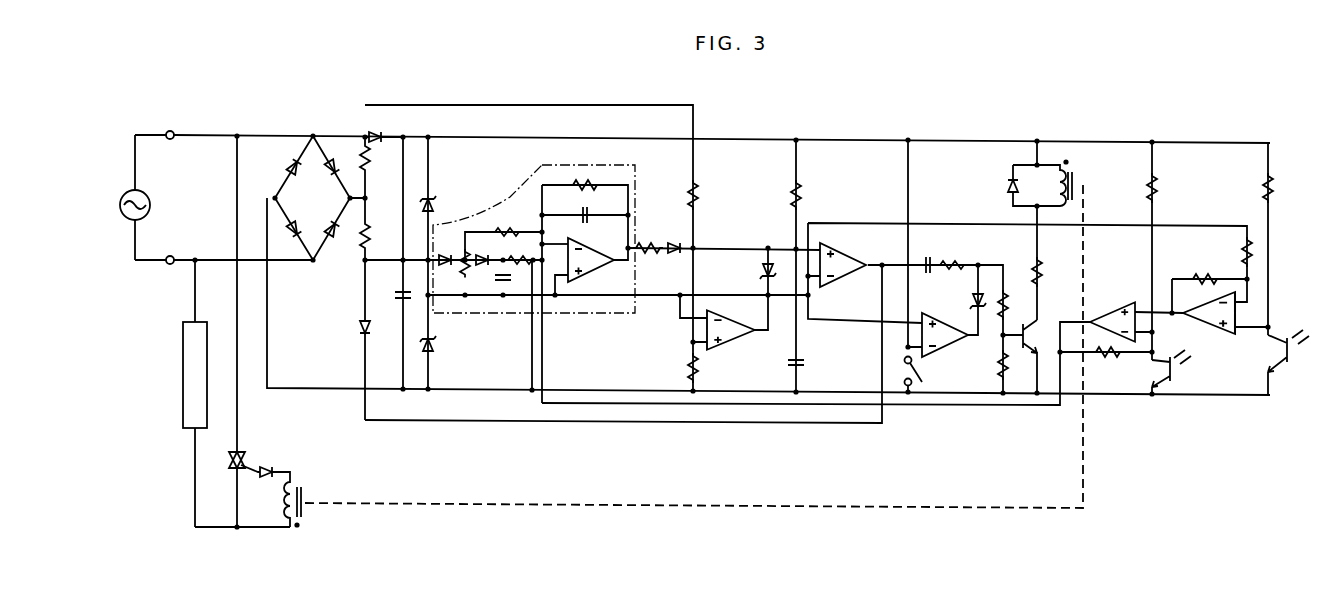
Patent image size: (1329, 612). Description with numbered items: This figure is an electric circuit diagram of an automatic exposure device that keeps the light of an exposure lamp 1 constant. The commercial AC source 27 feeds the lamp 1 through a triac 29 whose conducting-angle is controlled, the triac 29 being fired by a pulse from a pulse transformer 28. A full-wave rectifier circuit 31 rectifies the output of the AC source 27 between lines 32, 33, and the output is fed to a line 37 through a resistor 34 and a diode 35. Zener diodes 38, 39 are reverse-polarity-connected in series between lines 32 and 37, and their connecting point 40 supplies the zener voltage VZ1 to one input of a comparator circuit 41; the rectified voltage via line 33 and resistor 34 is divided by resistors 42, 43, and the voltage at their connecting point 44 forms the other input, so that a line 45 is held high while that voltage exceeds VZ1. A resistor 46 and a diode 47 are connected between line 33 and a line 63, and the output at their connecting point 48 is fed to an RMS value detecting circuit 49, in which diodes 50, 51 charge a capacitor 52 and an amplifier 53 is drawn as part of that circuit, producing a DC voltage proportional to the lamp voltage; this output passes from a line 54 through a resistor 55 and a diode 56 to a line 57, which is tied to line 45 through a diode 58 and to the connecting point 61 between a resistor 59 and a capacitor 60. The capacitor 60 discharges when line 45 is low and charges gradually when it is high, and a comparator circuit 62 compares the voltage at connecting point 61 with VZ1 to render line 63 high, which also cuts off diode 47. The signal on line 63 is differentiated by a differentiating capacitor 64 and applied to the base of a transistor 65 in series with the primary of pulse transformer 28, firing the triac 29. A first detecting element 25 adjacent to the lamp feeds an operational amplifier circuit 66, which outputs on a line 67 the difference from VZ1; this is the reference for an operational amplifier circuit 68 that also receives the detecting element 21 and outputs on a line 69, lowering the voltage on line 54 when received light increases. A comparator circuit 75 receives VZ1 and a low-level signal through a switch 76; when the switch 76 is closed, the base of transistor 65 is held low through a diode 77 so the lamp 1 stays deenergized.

The exposure lamp 1 is at (183, 390).
The detecting element 21 is at (1168, 388).
The first detecting element 25 is at (1277, 356).
The AC source 27 is at (147, 196).
The pulse transformer 28 is at (1076, 167).
The triac 29 is at (250, 465).
The full-wave rectifier circuit 31 is at (339, 155).
The line 32 is at (266, 320).
The line 33 is at (357, 204).
The resistor 34 is at (369, 163).
The diode 35 is at (379, 132).
The line 37 is at (495, 137).
The zener diode 38 is at (437, 200).
The zener diode 39 is at (433, 350).
The connecting point 40 is at (430, 298).
The comparator circuit 41 is at (732, 341).
The resistor 42 is at (696, 196).
The resistor 43 is at (697, 368).
The connecting point 44 is at (698, 350).
The line 45 is at (763, 336).
The resistor 46 is at (369, 235).
The diode 47 is at (362, 328).
The connecting point 48 is at (364, 262).
The RMS value detecting circuit 49 is at (533, 177).
The diode 50 is at (447, 255).
The diode 51 is at (471, 289).
The capacitor 52 is at (507, 290).
The operational amplifier 53 is at (590, 290).
The line 54 is at (645, 246).
The resistor 55 is at (650, 253).
The diode 56 is at (677, 243).
The line 57 is at (728, 247).
The diode 58 is at (760, 272).
The resistor 59 is at (800, 196).
The capacitor 60 is at (805, 363).
The connecting point 61 is at (796, 248).
The comparator circuit 62 is at (833, 280).
The line 63 is at (877, 263).
The differentiating capacitor 64 is at (935, 262).
The transistor 65 is at (1030, 334).
The operational amplifier circuit 66 is at (1213, 330).
The line 67 is at (1163, 318).
The operational amplifier circuit 68 is at (1115, 305).
The line 69 is at (1065, 379).
The comparator circuit 75 is at (945, 349).
The switch 76 is at (921, 386).
The diode 77 is at (972, 300).